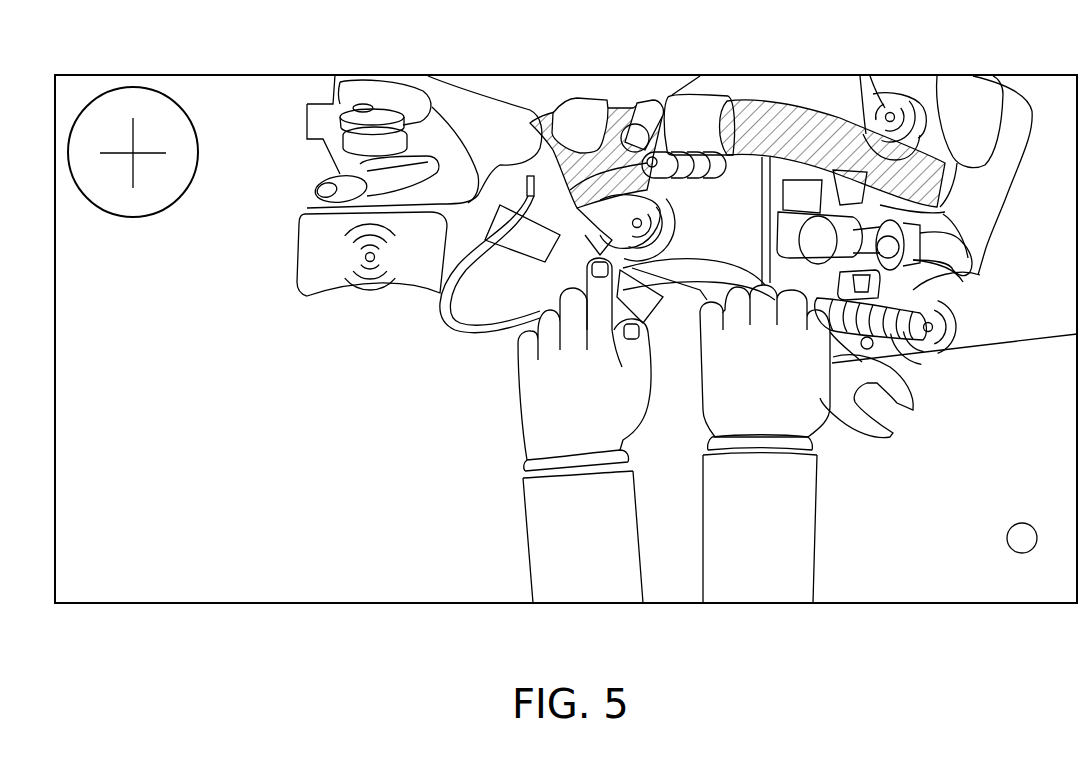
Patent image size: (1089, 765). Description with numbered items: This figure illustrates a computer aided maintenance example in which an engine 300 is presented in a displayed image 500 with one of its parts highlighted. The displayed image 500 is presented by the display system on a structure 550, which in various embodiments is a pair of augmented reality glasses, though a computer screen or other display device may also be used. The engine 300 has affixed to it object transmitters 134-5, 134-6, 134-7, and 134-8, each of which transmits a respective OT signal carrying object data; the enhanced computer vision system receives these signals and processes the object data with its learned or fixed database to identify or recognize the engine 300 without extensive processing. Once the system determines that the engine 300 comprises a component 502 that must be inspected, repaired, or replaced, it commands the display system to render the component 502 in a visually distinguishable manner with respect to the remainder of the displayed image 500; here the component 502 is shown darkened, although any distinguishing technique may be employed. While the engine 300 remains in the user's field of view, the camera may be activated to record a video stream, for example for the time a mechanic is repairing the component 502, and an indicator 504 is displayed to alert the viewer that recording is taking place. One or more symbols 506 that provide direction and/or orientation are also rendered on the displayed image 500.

The displayed image 500 is at (82, 92).
The structure 550 is at (226, 76).
The symbols 506 is at (130, 218).
The indicator 504 is at (1020, 522).
The engine 300 is at (296, 282).
The object transmitter 134-7 is at (370, 263).
The object transmitter 134-8 is at (645, 223).
The object transmitter 134-6 is at (891, 113).
The object transmitter 134-5 is at (933, 330).
The component 502 is at (802, 108).